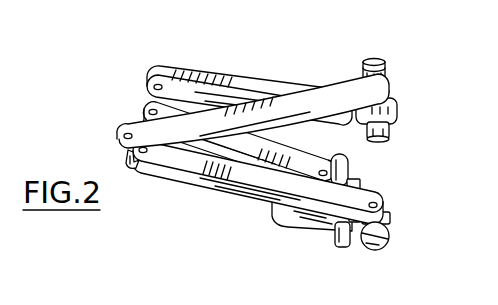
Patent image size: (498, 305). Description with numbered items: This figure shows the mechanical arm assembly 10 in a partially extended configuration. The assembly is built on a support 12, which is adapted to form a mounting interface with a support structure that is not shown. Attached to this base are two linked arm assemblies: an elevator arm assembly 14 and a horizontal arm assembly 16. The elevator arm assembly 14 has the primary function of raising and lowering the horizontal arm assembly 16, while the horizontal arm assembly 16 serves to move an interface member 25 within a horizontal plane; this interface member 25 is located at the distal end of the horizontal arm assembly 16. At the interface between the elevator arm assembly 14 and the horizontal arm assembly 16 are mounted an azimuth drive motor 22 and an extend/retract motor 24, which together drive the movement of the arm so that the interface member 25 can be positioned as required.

The mechanical arm assembly 10 is at (248, 150).
The support 12 is at (320, 228).
The elevator arm assembly 14 is at (176, 86).
The horizontal arm assembly 16 is at (131, 130).
The azimuth drive motor 22 is at (393, 142).
The extend/retract motor 24 is at (366, 56).
The interface member 25 is at (375, 240).